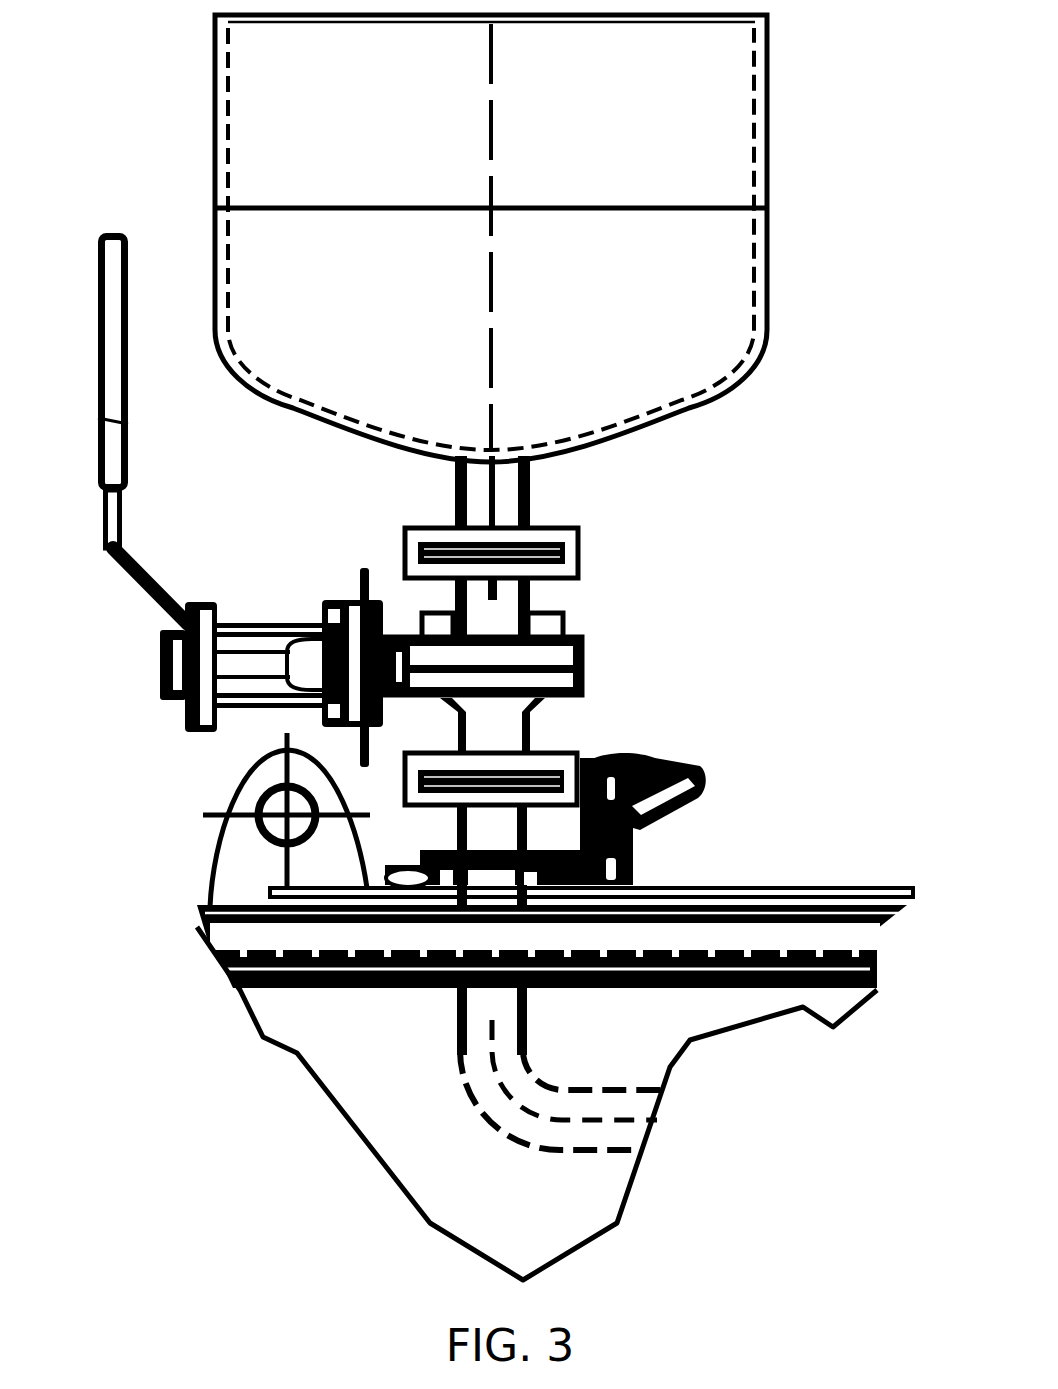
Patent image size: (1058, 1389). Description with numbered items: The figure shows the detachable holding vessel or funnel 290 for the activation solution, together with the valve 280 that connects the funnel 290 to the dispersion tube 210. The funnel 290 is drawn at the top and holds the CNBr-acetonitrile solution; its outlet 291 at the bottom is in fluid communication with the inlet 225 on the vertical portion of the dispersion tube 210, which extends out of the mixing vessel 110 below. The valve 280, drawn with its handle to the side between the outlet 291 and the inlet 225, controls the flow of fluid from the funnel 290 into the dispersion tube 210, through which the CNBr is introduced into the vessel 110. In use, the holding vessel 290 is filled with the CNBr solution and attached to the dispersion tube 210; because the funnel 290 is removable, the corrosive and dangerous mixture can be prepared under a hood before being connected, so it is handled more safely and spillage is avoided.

The detachable holding vessel or funnel 290 is at (712, 168).
The outlet 291 is at (580, 545).
The valve 280 is at (167, 688).
The inlet 225 is at (553, 752).
The vessel 110 is at (783, 887).
The dispersion tube 210 is at (490, 1068).